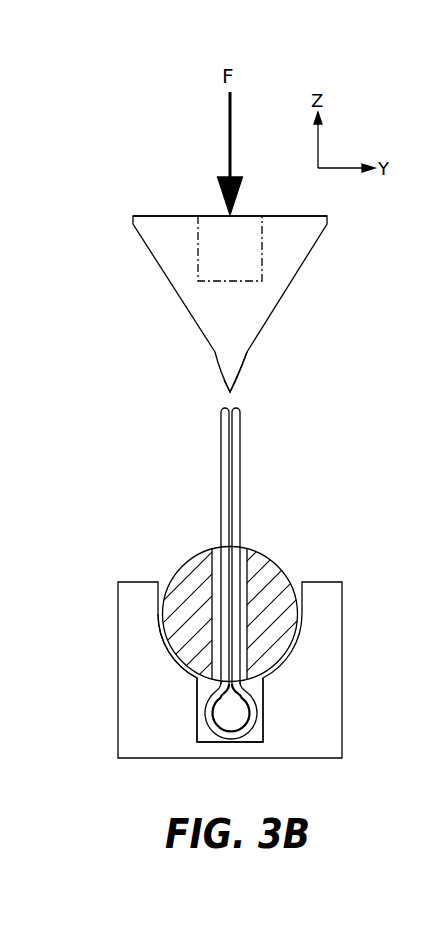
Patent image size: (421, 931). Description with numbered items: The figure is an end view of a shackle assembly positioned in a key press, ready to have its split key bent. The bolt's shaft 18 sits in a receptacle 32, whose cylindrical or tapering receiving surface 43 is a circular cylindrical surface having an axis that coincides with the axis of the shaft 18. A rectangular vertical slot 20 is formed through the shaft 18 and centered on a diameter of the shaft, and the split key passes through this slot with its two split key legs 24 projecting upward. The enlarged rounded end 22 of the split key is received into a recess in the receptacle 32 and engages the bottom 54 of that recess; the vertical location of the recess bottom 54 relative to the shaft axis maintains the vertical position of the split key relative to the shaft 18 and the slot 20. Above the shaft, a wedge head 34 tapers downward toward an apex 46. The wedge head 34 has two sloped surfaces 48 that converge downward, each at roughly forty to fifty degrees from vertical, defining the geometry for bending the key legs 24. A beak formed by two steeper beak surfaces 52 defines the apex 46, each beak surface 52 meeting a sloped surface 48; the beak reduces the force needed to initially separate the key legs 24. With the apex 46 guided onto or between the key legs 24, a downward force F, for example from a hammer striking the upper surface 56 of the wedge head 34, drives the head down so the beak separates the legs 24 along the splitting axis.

The shaft 18 is at (257, 568).
The vertical slot 20 is at (213, 566).
The enlarged rounded end 22 is at (205, 714).
The split key legs 24 is at (221, 448).
The receptacle 32 is at (337, 696).
The wedge head 34 is at (273, 228).
The receiving surface 43 is at (194, 665).
The apex 46 is at (233, 394).
The sloped surfaces 48 is at (312, 252).
The beak surfaces 52 is at (243, 362).
The bottom of recess 54 is at (263, 728).
The upper surface 56 is at (178, 215).